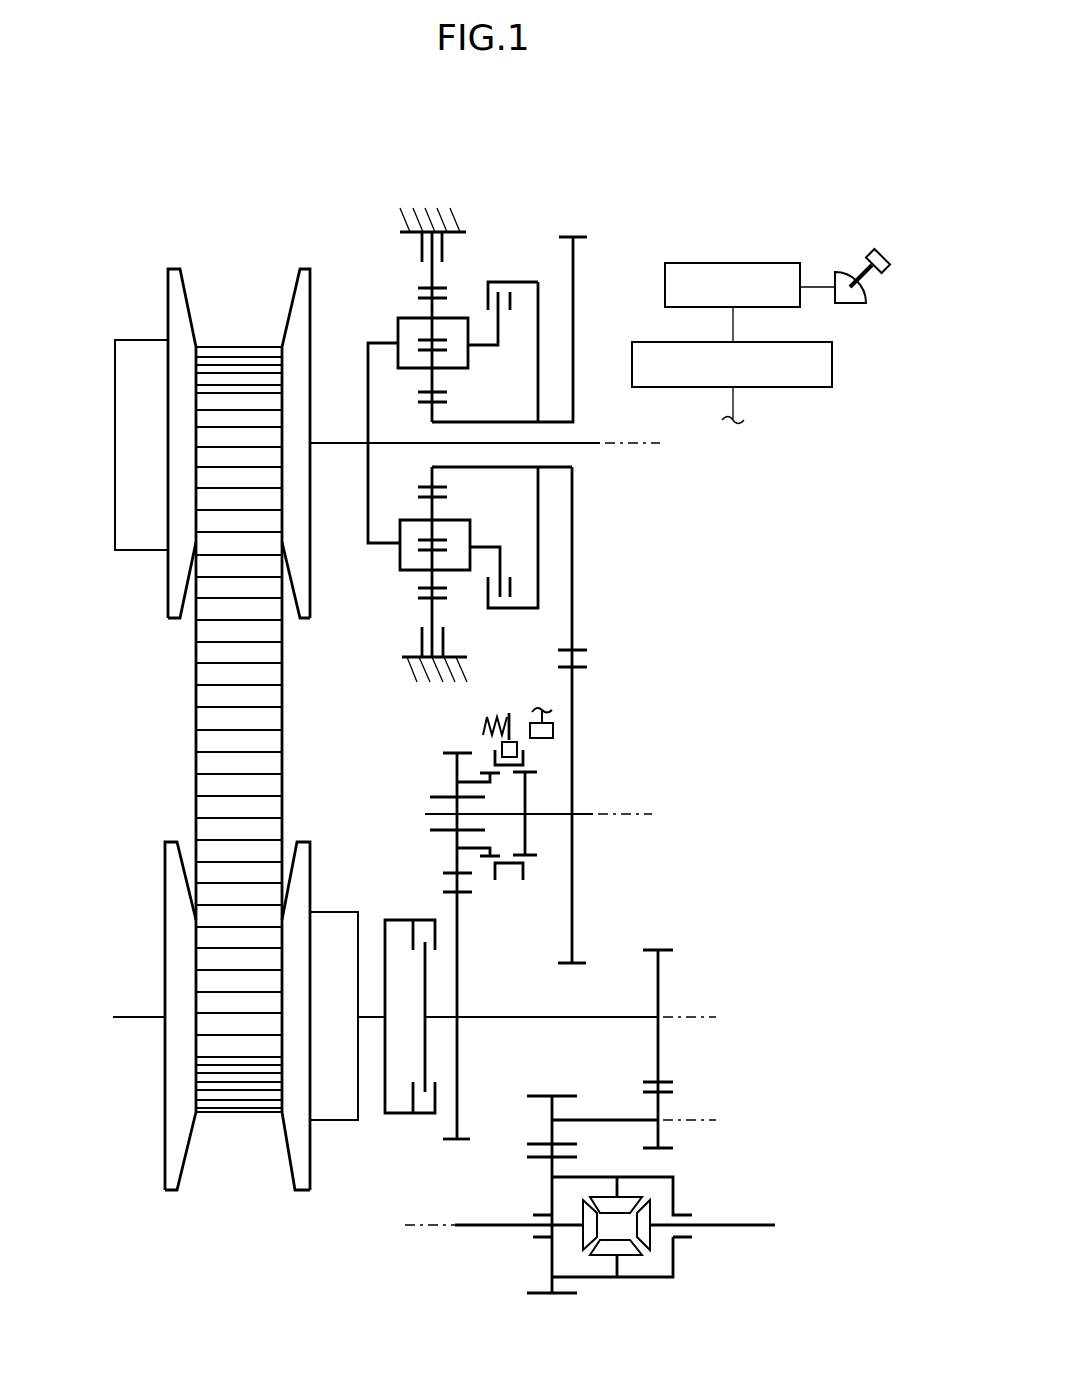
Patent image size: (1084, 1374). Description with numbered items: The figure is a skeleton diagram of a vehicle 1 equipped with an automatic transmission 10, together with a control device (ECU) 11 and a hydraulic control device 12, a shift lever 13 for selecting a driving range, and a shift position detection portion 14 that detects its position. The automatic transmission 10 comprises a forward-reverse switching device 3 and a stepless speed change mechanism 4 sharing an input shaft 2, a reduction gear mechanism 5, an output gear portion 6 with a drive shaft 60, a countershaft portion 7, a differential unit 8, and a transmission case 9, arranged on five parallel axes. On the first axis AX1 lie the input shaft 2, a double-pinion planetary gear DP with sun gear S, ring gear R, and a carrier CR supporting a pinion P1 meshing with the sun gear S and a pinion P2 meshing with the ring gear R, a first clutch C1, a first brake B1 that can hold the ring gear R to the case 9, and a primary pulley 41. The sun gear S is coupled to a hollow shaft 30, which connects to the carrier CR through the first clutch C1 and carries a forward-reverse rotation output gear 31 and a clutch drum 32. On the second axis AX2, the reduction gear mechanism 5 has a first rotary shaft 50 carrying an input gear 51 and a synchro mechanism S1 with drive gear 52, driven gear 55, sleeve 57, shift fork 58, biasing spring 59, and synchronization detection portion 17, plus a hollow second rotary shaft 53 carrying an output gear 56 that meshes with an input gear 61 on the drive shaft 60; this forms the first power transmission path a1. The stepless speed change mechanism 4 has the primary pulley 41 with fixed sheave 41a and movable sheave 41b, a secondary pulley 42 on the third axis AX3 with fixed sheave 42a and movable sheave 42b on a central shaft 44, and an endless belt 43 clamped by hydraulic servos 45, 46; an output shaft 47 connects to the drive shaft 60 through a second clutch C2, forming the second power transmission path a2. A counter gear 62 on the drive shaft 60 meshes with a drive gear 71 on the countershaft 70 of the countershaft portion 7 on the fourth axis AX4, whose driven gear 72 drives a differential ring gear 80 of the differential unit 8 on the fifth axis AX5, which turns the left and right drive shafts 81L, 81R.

The vehicle 1 is at (745, 168).
The input shaft 2 is at (583, 443).
The forward-reverse switching device 3 is at (518, 237).
The stepless speed change mechanism 4 is at (128, 242).
The reduction gear mechanism 5 is at (637, 720).
The output gear portion 6 is at (680, 930).
The countershaft portion 7 is at (700, 1098).
The differential unit 8 is at (718, 1192).
The transmission case 9 is at (410, 234).
The automatic transmission 10 is at (625, 228).
The control device (ECU) 11 is at (787, 263).
The hydraulic control device 12 is at (787, 387).
The shift lever 13 is at (868, 250).
The shift position detection portion 14 is at (845, 305).
The synchronization detection portion 17 is at (522, 722).
The hollow shaft 30 is at (557, 466).
The forward-reverse rotation output gear 31 is at (580, 648).
The clutch drum 32 is at (535, 520).
The primary pulley 41 is at (300, 225).
The fixed sheave 41a is at (293, 288).
The movable sheave 41b is at (185, 283).
The secondary pulley 42 is at (177, 1235).
The fixed sheave 42a is at (185, 1168).
The movable sheave 42b is at (292, 1173).
The endless belt 43 is at (195, 690).
The central shaft 44 is at (132, 1020).
The hydraulic servo 45 is at (137, 552).
The hydraulic servo 46 is at (340, 1122).
The output shaft 47 is at (372, 1020).
The first rotary shaft 50 is at (583, 808).
The input gear 51 is at (580, 960).
The drive gear 52 is at (530, 858).
The second rotary shaft 53 is at (445, 797).
The driven gear 55 is at (485, 858).
The output gear 56 is at (452, 752).
The sleeve 57 is at (508, 880).
The shift fork 58 is at (519, 748).
The biasing spring 59 is at (483, 727).
The drive shaft 60 is at (505, 1015).
The input gear 61 is at (465, 1140).
The counter gear 62 is at (657, 948).
The countershaft 70 is at (604, 1120).
The drive gear 71 is at (668, 1148).
The driven gear 72 is at (552, 1095).
The differential ring gear 80 is at (530, 1160).
The left drive shaft 81L is at (470, 1232).
The right drive shaft 81R is at (746, 1232).
The planetary gear DP is at (374, 313).
The first brake B1 is at (447, 257).
The first clutch C1 is at (497, 282).
The second clutch C2 is at (425, 940).
The carrier CR is at (368, 408).
The pinion P1 is at (445, 392).
The pinion P2 is at (420, 586).
The sun gear S is at (425, 403).
The ring gear R is at (422, 600).
The synchro mechanism S1 is at (492, 700).
The first axis AX1 is at (657, 443).
The second axis AX2 is at (648, 816).
The third axis AX3 is at (712, 1017).
The fourth axis AX4 is at (712, 1122).
The fifth axis AX5 is at (404, 1225).
The first power transmission path a1 is at (660, 627).
The second power transmission path a2 is at (155, 778).